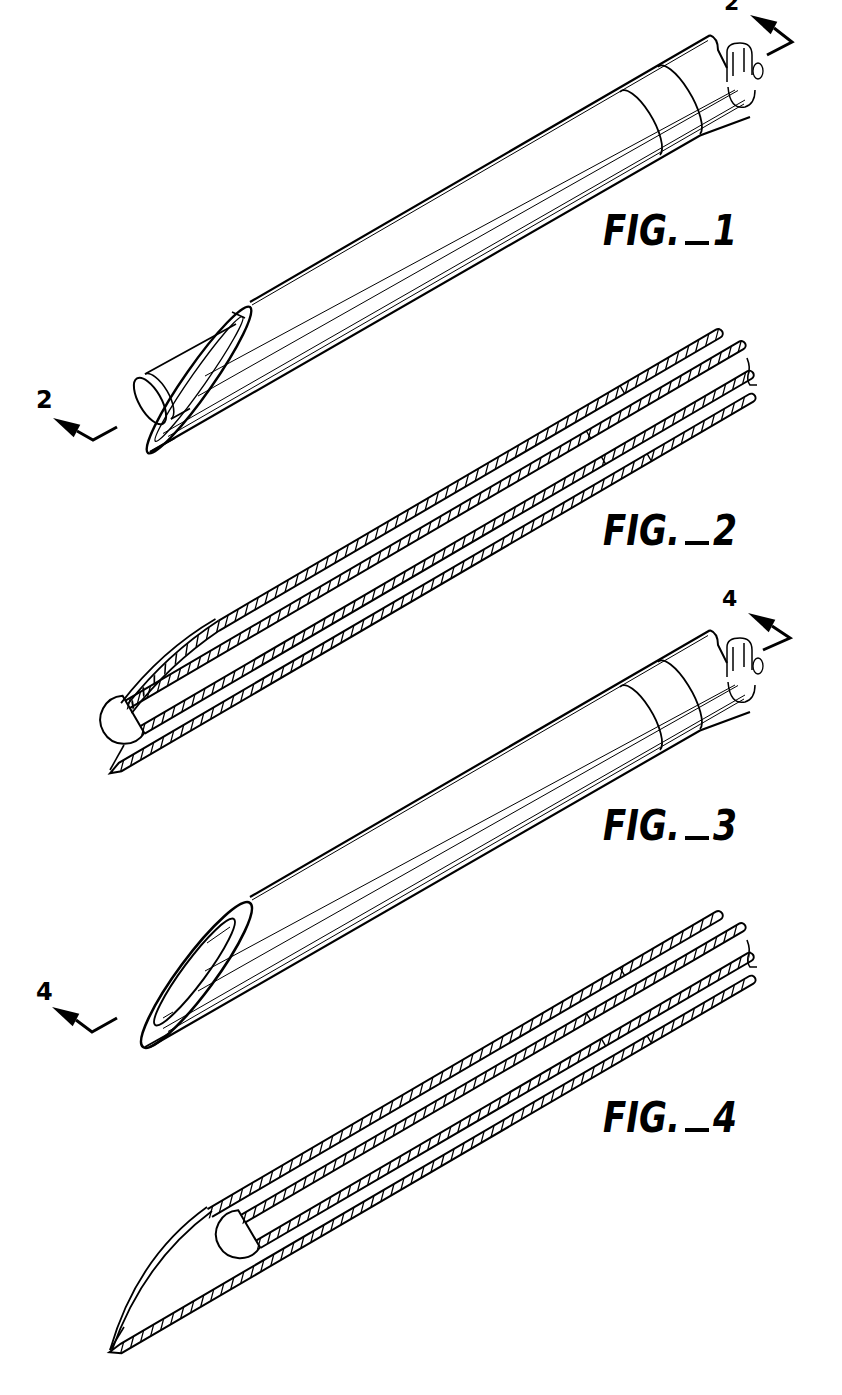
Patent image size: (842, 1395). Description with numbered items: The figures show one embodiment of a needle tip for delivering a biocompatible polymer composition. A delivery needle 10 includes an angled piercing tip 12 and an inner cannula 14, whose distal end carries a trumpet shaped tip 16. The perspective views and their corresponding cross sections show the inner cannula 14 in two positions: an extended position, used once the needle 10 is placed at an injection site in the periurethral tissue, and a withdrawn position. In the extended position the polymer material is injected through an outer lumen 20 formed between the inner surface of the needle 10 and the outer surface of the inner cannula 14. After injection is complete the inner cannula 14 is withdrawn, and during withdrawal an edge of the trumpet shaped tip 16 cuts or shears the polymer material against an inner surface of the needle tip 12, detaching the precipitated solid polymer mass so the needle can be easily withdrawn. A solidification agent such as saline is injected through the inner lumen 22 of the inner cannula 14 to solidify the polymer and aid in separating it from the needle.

In FIG. 1, the delivery needle 10 is at (512, 182).
In FIG. 3, the delivery needle 10 is at (491, 778).
In FIG. 2, the delivery needle 10 is at (303, 568).
In FIG. 4, the delivery needle 10 is at (357, 1122).
In FIG. 1, the angled piercing tip 12 is at (153, 454).
In FIG. 3, the angled piercing tip 12 is at (148, 1050).
In FIG. 2, the angled piercing tip 12 is at (111, 772).
In FIG. 4, the angled piercing tip 12 is at (110, 1347).
In FIG. 1, the inner cannula 14 is at (188, 382).
In FIG. 2, the inner cannula 14 is at (268, 623).
In FIG. 4, the inner cannula 14 is at (297, 1183).
In FIG. 1, the trumpet shaped tip 16 is at (142, 383).
In FIG. 2, the trumpet shaped tip 16 is at (108, 712).
In FIG. 4, the trumpet shaped tip 16 is at (230, 1220).
In FIG. 1, the outer lumen 20 is at (232, 312).
In FIG. 2, the outer lumen 20 is at (633, 397).
In FIG. 4, the outer lumen 20 is at (645, 973).
In FIG. 2, the inner lumen 22 is at (183, 690).
In FIG. 4, the inner lumen 22 is at (440, 1120).